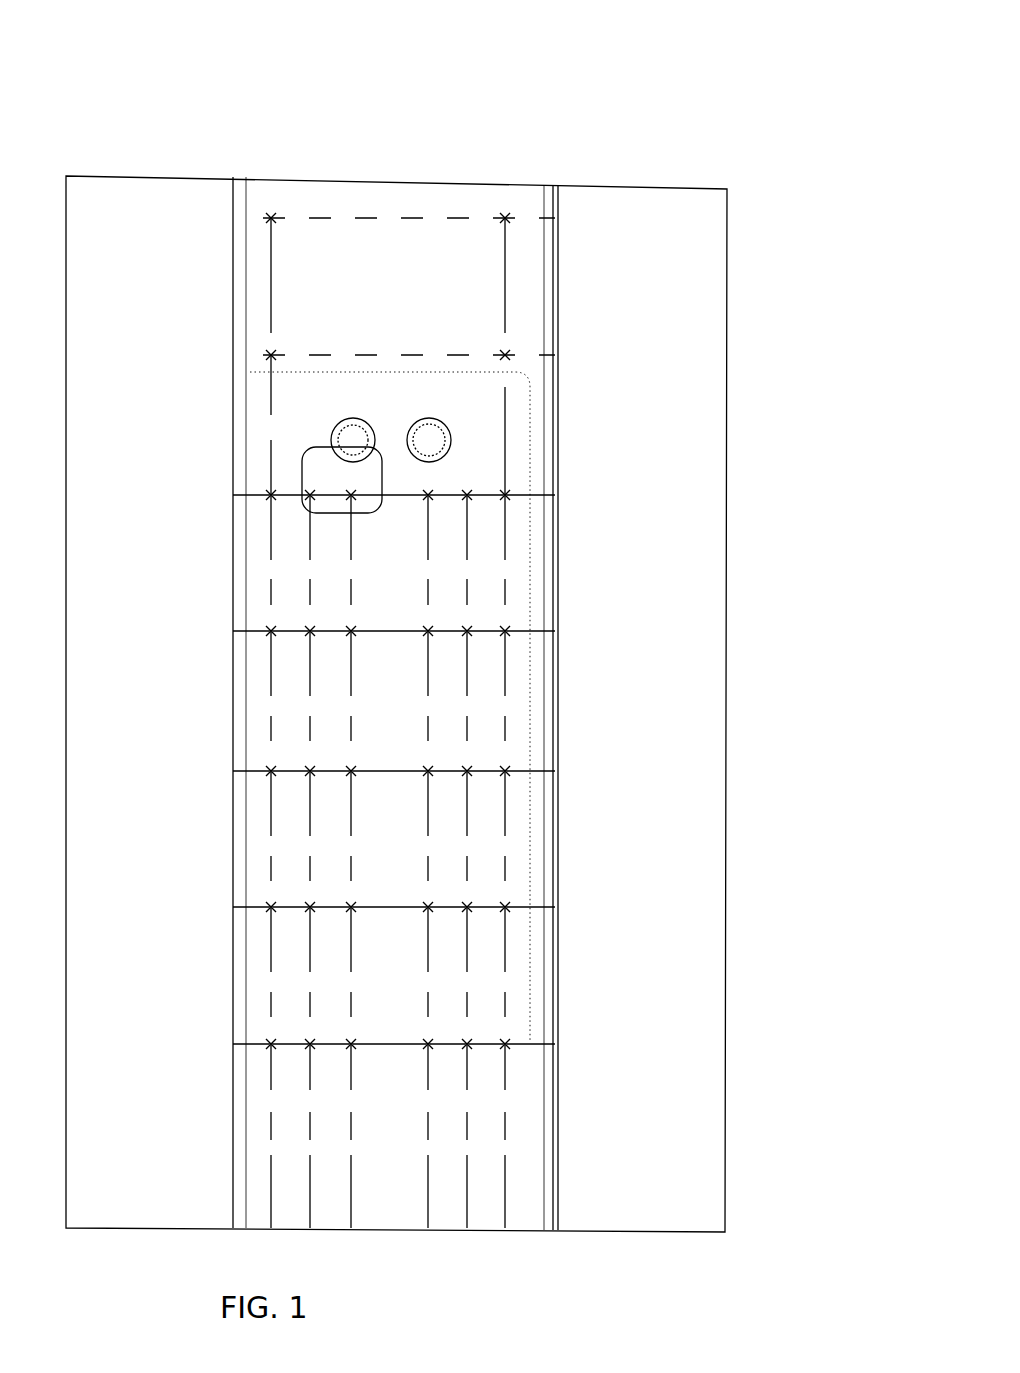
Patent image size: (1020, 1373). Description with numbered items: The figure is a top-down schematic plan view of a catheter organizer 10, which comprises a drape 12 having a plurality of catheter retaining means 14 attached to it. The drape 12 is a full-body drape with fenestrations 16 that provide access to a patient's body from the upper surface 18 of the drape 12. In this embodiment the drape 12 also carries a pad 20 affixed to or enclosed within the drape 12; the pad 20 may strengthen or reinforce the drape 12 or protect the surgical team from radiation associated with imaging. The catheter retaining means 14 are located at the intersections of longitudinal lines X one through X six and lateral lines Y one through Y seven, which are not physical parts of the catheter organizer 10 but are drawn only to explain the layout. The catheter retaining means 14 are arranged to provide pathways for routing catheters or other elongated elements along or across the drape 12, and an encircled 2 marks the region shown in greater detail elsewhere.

The catheter organizer 10 is at (654, 163).
The drape 12 is at (729, 508).
The catheter retaining means 14 is at (377, 696).
The fenestrations 16 is at (353, 418).
The upper surface 18 is at (262, 242).
The pad 20 is at (306, 372).
The detail view reference circle 2 is at (305, 447).